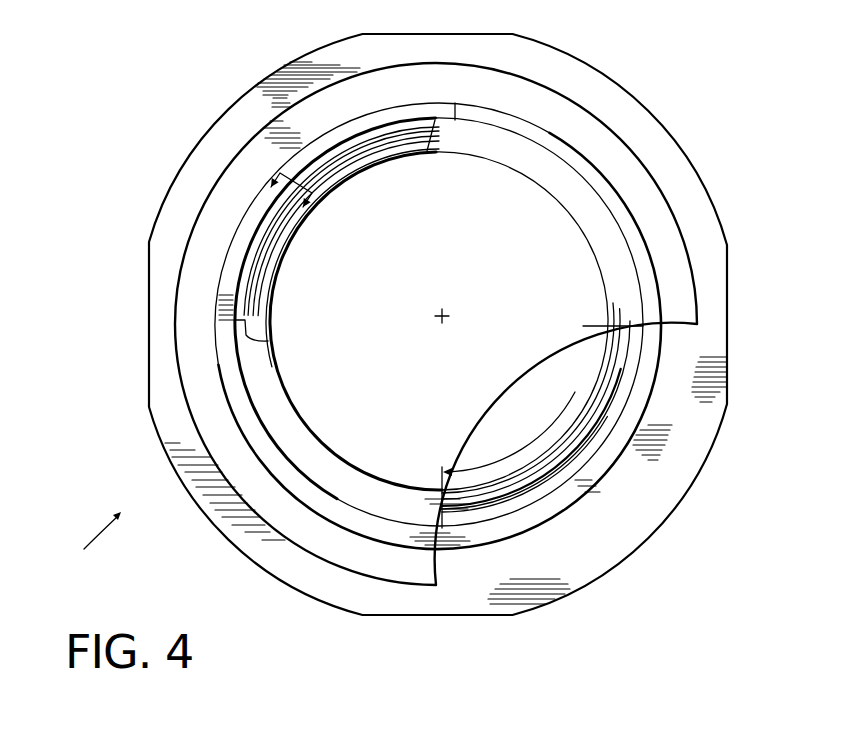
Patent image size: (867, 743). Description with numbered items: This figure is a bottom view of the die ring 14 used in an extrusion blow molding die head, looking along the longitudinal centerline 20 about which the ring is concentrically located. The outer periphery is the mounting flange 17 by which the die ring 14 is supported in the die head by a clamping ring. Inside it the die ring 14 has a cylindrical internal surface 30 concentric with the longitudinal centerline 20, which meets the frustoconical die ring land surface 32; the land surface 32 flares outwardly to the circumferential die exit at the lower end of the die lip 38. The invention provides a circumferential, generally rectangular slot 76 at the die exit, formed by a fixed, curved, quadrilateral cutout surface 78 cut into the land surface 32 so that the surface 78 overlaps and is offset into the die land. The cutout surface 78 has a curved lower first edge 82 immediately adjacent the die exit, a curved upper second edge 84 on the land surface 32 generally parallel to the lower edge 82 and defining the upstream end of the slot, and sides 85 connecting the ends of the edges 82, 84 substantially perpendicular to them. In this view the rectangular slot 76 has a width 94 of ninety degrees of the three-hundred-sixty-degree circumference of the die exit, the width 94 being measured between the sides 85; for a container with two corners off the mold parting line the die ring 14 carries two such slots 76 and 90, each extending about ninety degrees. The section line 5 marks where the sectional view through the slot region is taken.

The die ring 14 is at (81, 537).
The mounting flange 17 is at (683, 150).
The longitudinal centerline 20 is at (448, 313).
The cylindrical internal surface 30 is at (403, 487).
The die ring land surface 32 is at (304, 446).
The die lip 38 is at (227, 374).
The rectangular slot 76 is at (421, 115).
The rectangular cutout surface 78 is at (238, 299).
The lower first edge 82 is at (246, 248).
The upper second edge 84 is at (428, 154).
The sides 85 is at (457, 104).
The rectangular slot 90 is at (567, 481).
The width 94 is at (588, 333).
The section line 5- 5 is at (289, 198).